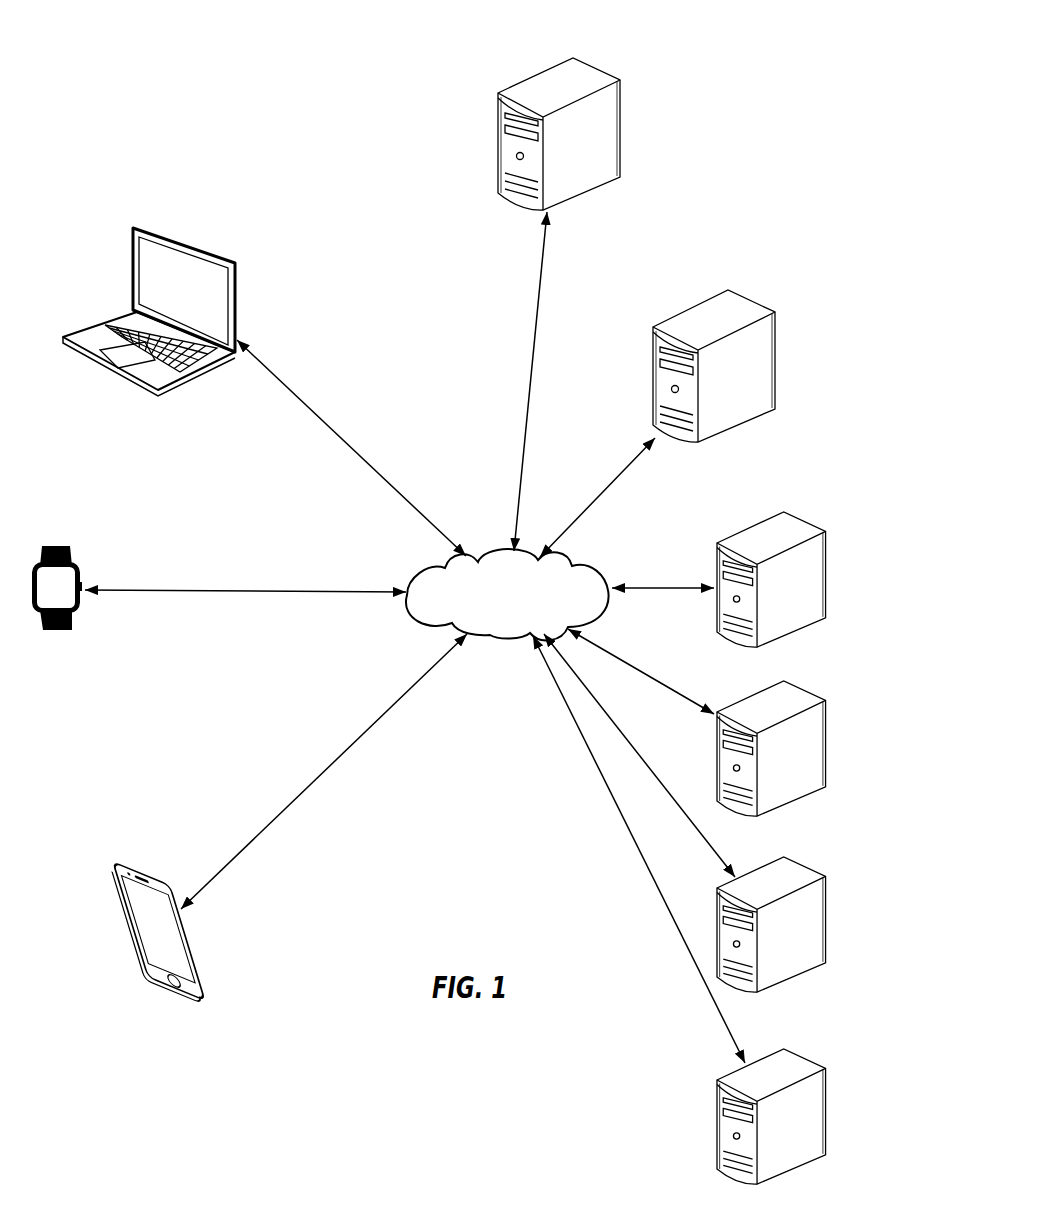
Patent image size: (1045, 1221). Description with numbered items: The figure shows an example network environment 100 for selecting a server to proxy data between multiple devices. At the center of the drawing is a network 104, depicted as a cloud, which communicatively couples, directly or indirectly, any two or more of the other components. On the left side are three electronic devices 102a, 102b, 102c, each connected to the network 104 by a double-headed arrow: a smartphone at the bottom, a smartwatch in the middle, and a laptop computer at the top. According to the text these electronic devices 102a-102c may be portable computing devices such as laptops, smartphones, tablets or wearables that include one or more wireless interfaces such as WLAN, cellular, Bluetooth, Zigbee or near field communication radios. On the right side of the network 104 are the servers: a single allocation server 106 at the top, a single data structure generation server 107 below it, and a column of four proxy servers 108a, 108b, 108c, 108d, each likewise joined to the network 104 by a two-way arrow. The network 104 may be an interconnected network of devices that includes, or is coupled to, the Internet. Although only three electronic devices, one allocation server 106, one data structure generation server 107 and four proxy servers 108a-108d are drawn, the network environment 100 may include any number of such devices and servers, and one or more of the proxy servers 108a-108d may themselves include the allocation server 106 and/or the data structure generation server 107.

The network environment 100 is at (80, 140).
The electronic device 102a is at (155, 991).
The electronic device 102b is at (45, 633).
The electronic device 102c is at (150, 394).
The network 104 is at (490, 636).
The allocation server 106 is at (510, 86).
The data structure generation server 107 is at (665, 313).
The proxy server 108a is at (812, 522).
The proxy server 108b is at (812, 693).
The proxy server 108c is at (812, 868).
The proxy server 108d is at (813, 1063).